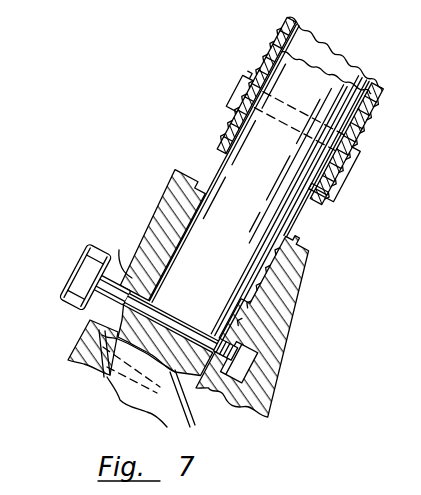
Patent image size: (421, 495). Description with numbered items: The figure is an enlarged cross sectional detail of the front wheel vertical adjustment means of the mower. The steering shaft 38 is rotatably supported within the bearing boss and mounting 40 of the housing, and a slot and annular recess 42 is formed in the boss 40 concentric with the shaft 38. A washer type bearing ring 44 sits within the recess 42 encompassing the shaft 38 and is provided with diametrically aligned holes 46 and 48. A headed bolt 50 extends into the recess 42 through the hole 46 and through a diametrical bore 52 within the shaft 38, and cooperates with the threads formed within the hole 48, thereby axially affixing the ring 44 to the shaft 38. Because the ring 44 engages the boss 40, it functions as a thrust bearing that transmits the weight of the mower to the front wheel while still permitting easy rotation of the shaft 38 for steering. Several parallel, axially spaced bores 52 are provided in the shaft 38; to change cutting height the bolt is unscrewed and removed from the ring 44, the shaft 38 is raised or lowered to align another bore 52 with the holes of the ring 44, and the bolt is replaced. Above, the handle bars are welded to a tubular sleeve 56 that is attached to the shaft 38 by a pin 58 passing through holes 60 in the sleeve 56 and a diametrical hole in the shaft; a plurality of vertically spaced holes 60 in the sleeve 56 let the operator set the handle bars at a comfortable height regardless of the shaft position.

The shaft 38 is at (130, 393).
The bearing boss and mounting 40 is at (285, 324).
The slot and annular recess 42 is at (102, 315).
The washer type bearing ring 44 is at (226, 387).
The hole 46 is at (156, 294).
The hole 48 is at (239, 343).
The headed bolt 50 is at (59, 272).
The diametrical bore 52 is at (220, 284).
The tubular sleeve 56 is at (381, 99).
The pin 58 is at (237, 101).
The holes 60 is at (268, 70).